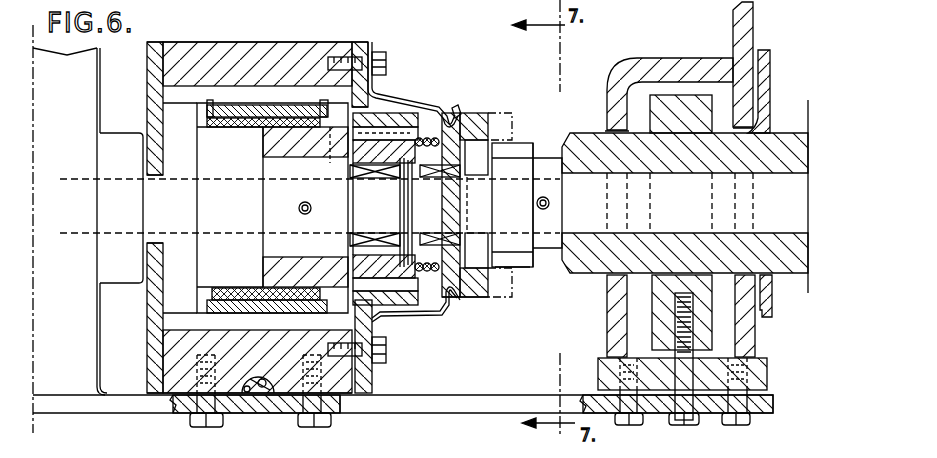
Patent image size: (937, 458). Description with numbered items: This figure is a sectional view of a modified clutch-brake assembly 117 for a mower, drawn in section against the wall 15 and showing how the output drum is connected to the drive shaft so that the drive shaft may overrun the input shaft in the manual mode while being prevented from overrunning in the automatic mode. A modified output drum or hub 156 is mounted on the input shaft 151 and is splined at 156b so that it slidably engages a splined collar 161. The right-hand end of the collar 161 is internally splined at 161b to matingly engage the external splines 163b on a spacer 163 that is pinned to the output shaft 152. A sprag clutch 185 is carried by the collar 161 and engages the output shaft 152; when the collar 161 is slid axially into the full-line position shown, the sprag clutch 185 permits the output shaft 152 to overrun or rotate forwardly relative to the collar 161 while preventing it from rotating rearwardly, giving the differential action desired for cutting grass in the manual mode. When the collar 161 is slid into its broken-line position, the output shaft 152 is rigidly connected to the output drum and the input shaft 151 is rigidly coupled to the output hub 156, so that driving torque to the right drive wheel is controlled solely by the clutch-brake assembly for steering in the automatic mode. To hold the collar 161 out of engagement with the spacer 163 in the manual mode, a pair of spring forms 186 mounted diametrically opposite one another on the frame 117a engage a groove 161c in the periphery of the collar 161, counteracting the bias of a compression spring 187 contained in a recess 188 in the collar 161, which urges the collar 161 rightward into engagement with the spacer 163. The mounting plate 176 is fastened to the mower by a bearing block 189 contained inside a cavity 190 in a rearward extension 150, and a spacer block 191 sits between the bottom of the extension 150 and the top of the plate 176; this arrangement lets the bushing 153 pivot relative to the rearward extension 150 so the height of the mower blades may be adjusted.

The bulkhead wall 15 is at (88, 82).
The clutch-brake assembly 117 is at (292, 53).
The frame 117a is at (370, 385).
The rearward extension 150 is at (627, 60).
The input shaft 151 is at (157, 207).
The output shaft 152 is at (692, 214).
The bushing 153 is at (786, 133).
The output drum or hub 156 is at (292, 145).
The splines 156b is at (353, 147).
The splined collar 161 is at (498, 112).
The internal splines 161b is at (481, 270).
The groove 161c is at (450, 116).
The spacer 163 is at (538, 158).
The external splines 163b is at (522, 268).
The mounting plate 176 is at (497, 397).
The sprag clutch 185 is at (443, 177).
The spring forms 186 is at (393, 133).
The compression spring 187 is at (430, 268).
The recess 188 is at (418, 272).
The bearing block 189 is at (658, 314).
The cavity 190 is at (740, 334).
The spacer block 191 is at (760, 377).